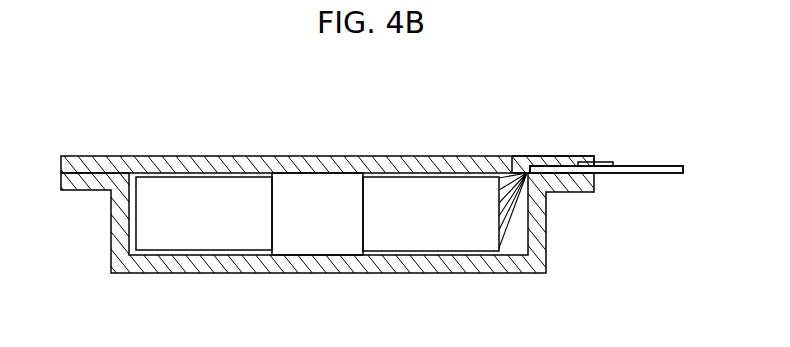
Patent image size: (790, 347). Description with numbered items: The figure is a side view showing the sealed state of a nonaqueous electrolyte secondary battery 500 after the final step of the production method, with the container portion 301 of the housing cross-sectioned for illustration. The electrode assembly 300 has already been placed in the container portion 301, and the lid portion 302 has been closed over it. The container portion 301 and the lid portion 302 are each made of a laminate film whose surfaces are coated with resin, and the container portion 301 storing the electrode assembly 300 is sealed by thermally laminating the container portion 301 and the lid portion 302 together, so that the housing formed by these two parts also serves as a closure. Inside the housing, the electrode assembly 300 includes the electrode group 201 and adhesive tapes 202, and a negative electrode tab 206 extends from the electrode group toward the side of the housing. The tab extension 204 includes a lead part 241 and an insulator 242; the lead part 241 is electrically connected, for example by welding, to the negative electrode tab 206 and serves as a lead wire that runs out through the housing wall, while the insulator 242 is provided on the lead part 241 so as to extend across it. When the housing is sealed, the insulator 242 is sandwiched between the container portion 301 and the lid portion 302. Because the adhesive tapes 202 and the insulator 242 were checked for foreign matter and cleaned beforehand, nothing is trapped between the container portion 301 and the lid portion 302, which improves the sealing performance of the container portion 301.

The nonaqueous electrolyte secondary battery 500 is at (534, 89).
The electrode assembly 300 is at (445, 172).
The container portion 301 is at (330, 274).
The lid portion 302 is at (221, 157).
The negative electrode tab 206 is at (512, 156).
The electrode group 201 is at (396, 190).
The adhesive tapes 202 is at (313, 190).
The tab extension 204 is at (638, 164).
The lead part 241 is at (660, 174).
The insulator 242 is at (610, 162).